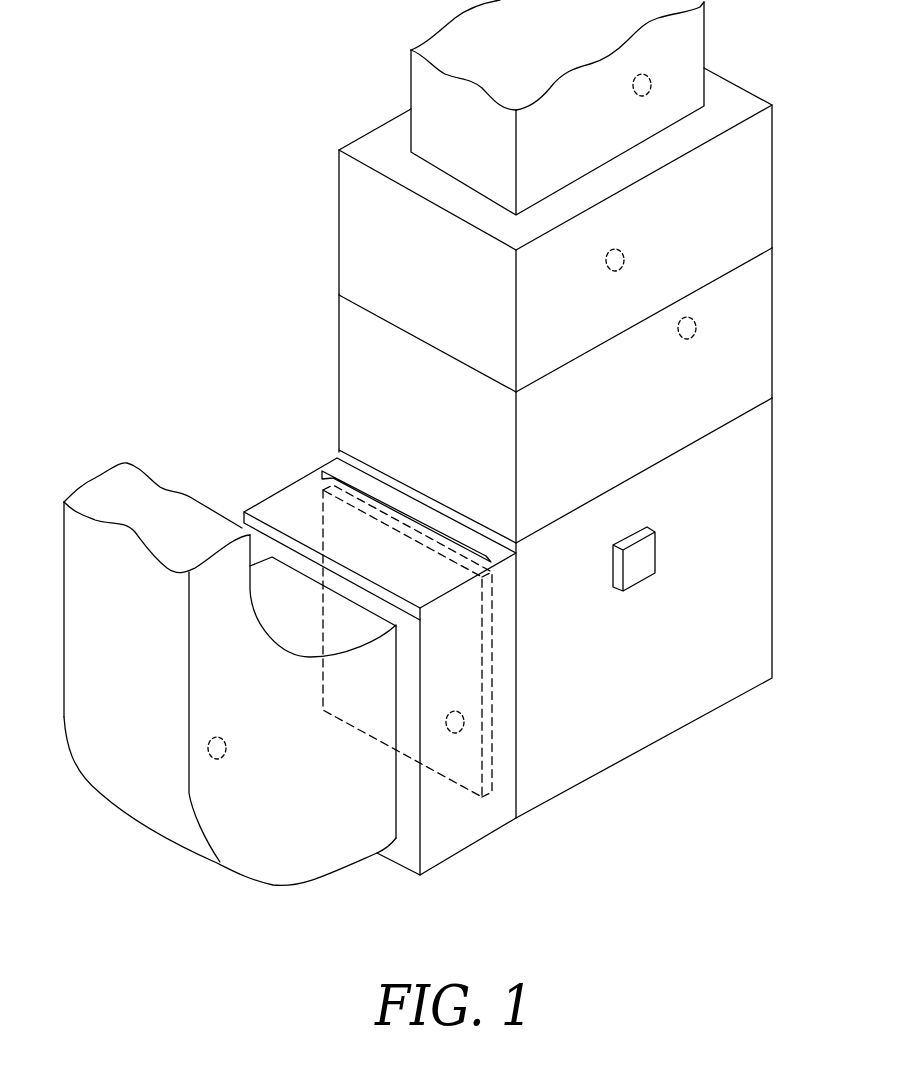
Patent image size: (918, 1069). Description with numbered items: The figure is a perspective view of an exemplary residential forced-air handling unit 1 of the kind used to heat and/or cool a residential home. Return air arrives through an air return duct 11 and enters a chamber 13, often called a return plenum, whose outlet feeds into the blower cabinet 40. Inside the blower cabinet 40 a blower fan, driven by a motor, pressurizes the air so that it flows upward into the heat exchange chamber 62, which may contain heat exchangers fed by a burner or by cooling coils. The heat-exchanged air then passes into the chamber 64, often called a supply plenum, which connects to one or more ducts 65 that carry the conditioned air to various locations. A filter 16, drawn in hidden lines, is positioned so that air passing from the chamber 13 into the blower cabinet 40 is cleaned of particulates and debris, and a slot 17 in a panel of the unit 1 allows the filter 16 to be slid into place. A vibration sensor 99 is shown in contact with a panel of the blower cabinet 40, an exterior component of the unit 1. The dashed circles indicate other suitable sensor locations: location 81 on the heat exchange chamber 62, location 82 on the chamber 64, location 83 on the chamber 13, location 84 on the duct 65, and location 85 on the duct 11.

The residential forced-air handling unit 1 is at (178, 189).
The air return duct 11 is at (201, 674).
The chamber (return plenum) 13 is at (413, 671).
The filter 16 is at (492, 595).
The slot 17 is at (338, 478).
The blower cabinet 40 is at (677, 608).
The heat exchange chamber 62 is at (587, 395).
The chamber (supply plenum) 64 is at (591, 230).
The duct 65 is at (593, 107).
The sensor location on heat exchange chamber 81 is at (682, 342).
The sensor location on supply plenum chamber 82 is at (624, 251).
The sensor location on return plenum chamber 83 is at (465, 723).
The sensor location on supply duct 84 is at (636, 101).
The sensor location on air return duct 85 is at (206, 752).
The vibration sensor 99 is at (638, 558).